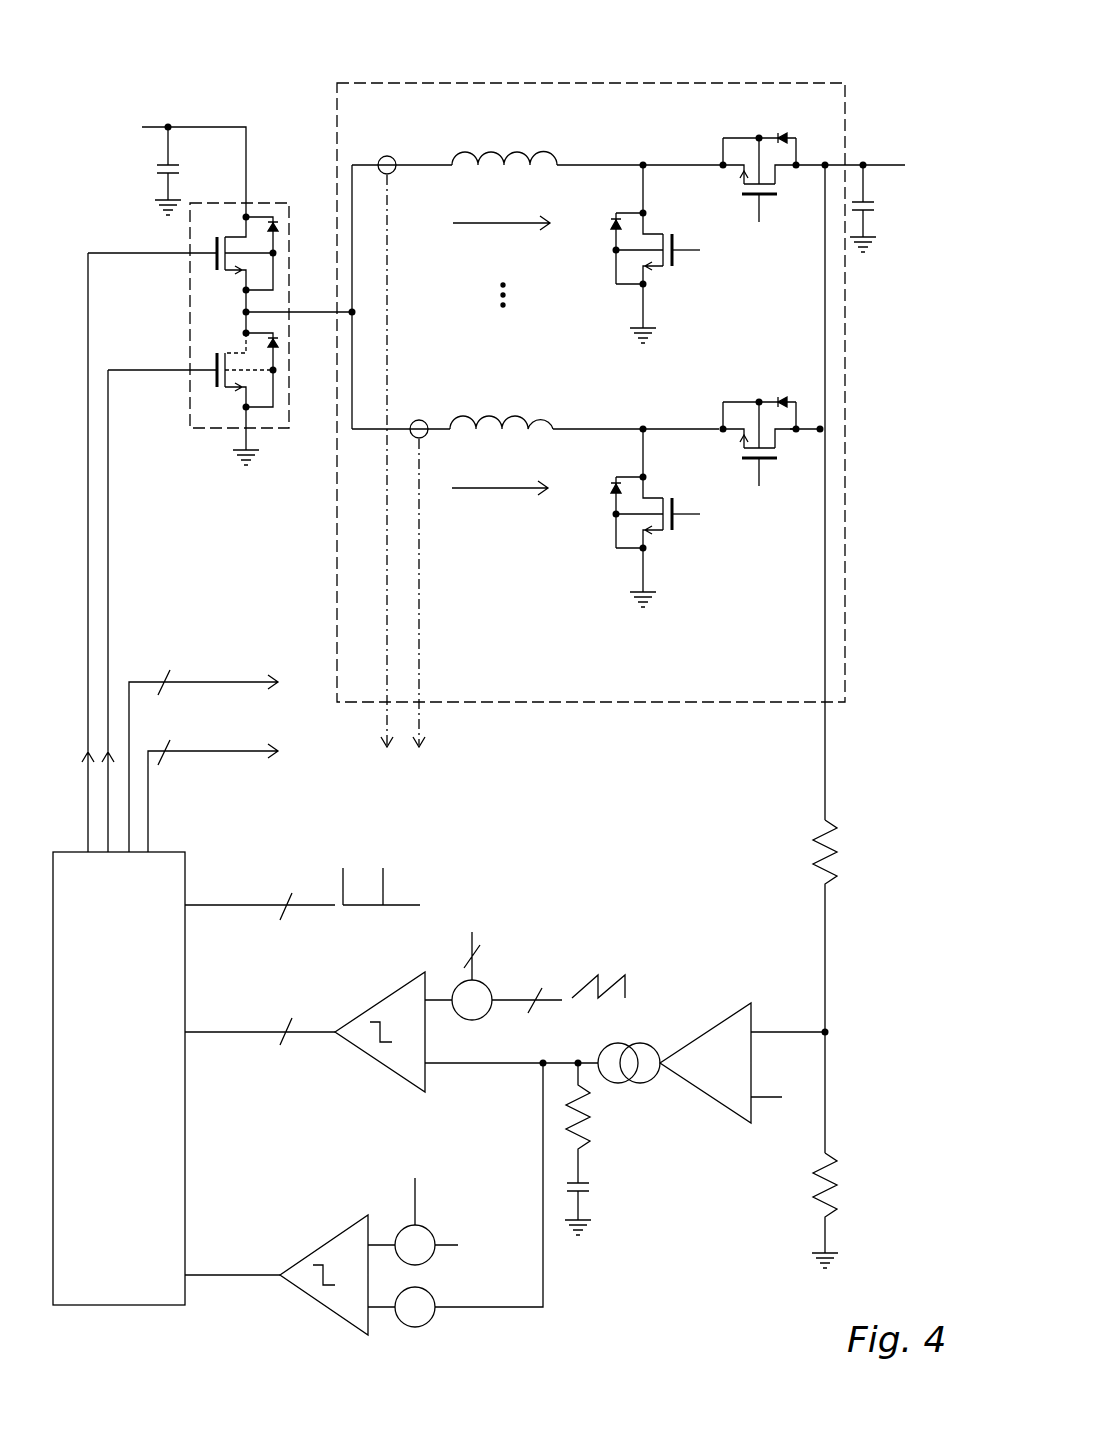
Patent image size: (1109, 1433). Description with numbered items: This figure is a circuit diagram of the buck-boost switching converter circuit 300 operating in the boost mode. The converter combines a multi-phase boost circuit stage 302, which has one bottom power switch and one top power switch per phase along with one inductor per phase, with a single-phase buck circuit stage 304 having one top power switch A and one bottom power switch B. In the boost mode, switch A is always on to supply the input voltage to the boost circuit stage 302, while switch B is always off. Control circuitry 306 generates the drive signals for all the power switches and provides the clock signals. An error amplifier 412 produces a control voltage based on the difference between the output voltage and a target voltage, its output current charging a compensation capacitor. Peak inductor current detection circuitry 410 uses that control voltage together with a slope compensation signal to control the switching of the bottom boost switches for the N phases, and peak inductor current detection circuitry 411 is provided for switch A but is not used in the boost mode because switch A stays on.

The switching converter circuit 300 is at (501, 683).
The multi-phase boost circuit stage 302 is at (590, 83).
The single-phase buck circuit stage 304 is at (190, 315).
The control circuitry 306 is at (120, 1307).
The peak inductor current detection circuitry 410 is at (380, 1000).
The peak inductor current detection circuitry 411 is at (326, 1252).
The error amplifier 412 is at (706, 1034).